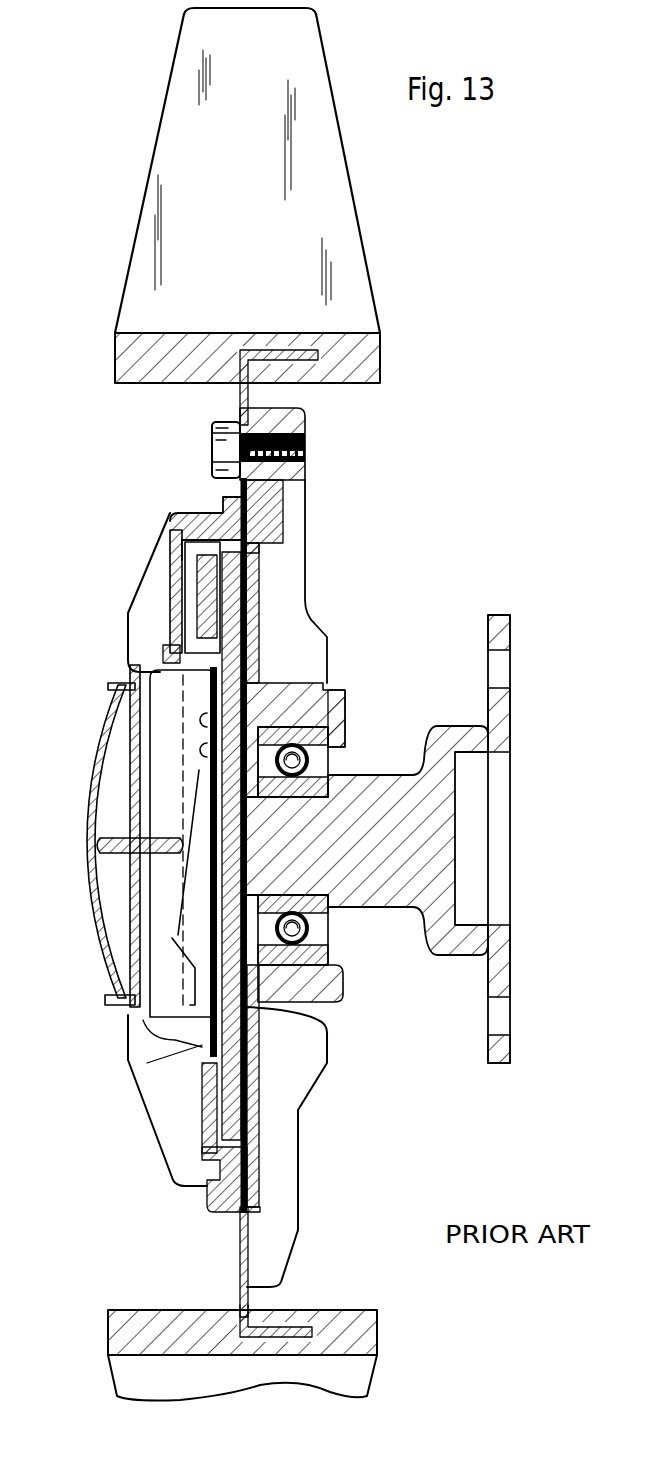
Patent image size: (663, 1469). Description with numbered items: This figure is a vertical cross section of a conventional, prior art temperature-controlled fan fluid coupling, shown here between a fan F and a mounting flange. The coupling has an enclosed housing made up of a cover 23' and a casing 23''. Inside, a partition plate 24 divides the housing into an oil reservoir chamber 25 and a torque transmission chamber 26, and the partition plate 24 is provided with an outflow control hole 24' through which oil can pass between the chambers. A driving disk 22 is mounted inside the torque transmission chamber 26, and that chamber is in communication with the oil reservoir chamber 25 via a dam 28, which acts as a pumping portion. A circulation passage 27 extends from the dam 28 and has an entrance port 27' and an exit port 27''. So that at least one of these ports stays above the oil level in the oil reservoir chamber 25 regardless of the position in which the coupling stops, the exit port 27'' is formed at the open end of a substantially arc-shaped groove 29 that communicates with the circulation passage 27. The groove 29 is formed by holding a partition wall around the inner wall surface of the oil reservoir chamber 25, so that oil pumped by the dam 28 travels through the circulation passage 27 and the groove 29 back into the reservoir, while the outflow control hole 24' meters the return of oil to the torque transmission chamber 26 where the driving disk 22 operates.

The flywheel F is at (345, 220).
The driving disk 22 is at (230, 647).
The cover 23' is at (126, 592).
The casing 23'' is at (307, 602).
The partition plate 24 is at (128, 862).
The outflow control hole 24' is at (289, 1126).
The oil reservoir chamber 25 is at (162, 737).
The torque transmission chamber 26 is at (343, 702).
The circulation passage 27 is at (159, 597).
The entrance port 27' is at (191, 514).
The exit port 27'' is at (146, 1100).
The dam 28 is at (259, 545).
The arc-shaped groove 29 is at (183, 803).